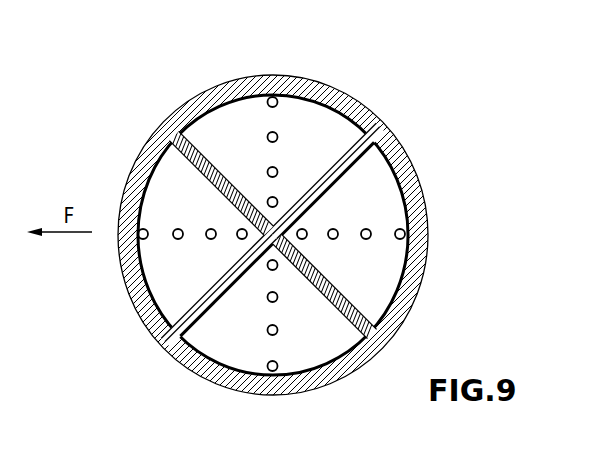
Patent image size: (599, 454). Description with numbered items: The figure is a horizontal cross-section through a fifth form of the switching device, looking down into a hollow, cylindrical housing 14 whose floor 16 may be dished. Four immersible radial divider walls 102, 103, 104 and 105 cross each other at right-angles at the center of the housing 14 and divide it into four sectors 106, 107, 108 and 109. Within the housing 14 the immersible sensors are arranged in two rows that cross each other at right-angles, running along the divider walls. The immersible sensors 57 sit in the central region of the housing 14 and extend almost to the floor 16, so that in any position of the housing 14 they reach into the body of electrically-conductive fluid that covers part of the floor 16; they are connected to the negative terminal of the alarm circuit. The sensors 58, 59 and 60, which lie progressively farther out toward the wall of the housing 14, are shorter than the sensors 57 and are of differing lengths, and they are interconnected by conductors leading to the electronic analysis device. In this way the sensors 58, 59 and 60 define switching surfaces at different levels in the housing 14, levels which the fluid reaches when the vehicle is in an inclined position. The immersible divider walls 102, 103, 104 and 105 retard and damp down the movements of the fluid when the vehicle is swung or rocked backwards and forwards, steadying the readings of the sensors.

The housing 14 is at (433, 182).
The floor 16 is at (382, 207).
The immersible sensors 57 is at (242, 228).
The immersible sensors 58 is at (278, 170).
The immersible sensors 59 is at (267, 137).
The immersible sensors 60 is at (276, 97).
The immersible radial divider wall 102 is at (186, 140).
The immersible radial divider wall 103 is at (362, 138).
The immersible radial divider wall 104 is at (378, 345).
The immersible radial divider wall 105 is at (166, 337).
The sector 106 is at (167, 162).
The sector 107 is at (248, 108).
The sector 108 is at (392, 277).
The sector 109 is at (224, 344).